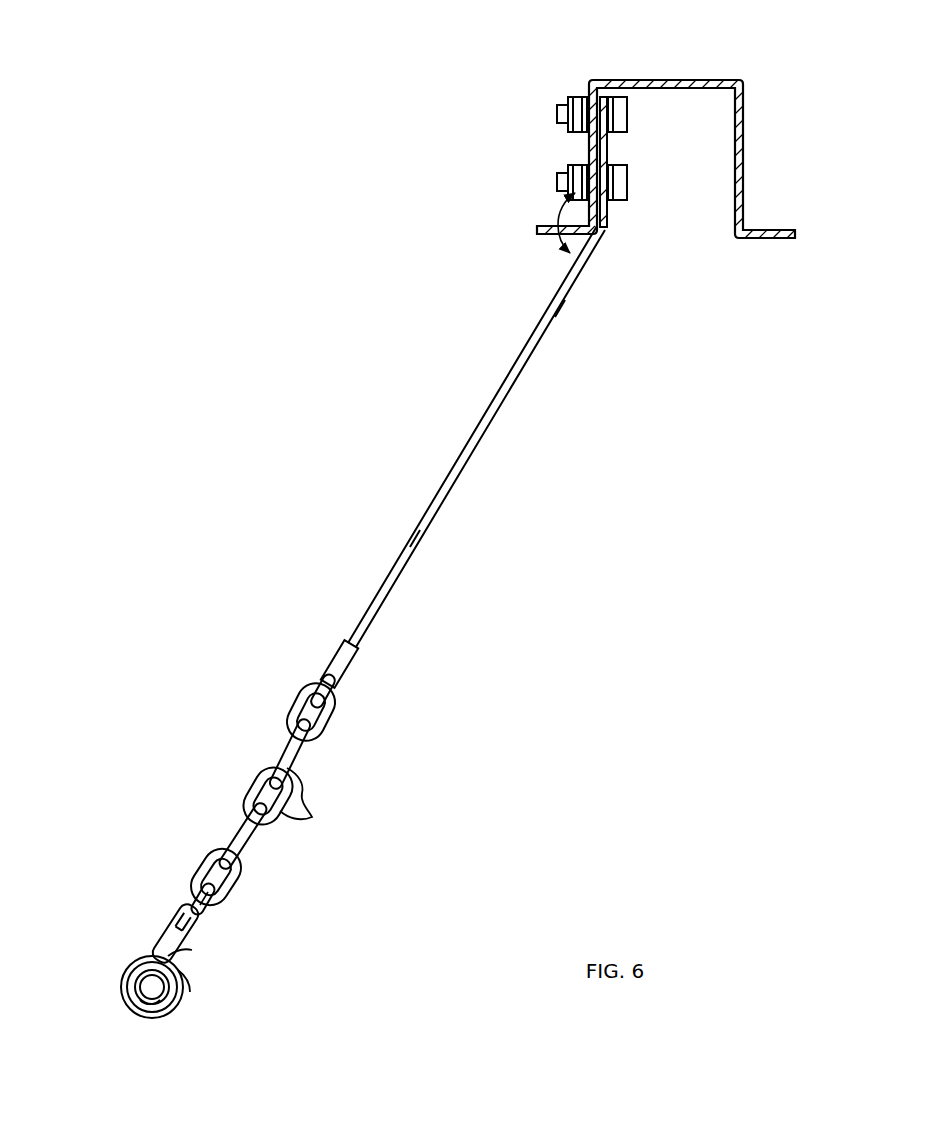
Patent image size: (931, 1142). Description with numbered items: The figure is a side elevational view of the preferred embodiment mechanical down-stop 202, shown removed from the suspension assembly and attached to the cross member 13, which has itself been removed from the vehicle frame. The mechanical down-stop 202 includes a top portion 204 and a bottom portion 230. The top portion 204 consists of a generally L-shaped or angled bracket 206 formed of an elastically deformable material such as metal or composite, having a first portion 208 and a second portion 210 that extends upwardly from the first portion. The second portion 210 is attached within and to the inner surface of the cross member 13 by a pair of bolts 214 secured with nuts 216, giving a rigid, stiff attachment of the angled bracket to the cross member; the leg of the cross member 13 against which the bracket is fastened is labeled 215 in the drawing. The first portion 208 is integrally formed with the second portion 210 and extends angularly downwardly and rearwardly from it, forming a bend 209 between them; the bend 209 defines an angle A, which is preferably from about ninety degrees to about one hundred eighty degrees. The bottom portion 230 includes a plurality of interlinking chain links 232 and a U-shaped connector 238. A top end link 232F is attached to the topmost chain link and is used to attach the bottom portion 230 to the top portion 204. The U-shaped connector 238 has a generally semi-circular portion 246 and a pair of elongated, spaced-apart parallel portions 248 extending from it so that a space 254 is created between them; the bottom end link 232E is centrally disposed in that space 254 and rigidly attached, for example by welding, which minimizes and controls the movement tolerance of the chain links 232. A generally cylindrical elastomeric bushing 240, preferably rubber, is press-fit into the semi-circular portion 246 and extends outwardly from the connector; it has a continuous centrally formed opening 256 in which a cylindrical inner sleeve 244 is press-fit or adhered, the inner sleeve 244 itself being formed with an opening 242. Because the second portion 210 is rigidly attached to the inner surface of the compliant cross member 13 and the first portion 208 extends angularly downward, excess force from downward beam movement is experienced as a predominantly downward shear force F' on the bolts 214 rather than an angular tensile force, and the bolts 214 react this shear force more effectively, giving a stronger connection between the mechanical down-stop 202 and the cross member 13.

The cross member 13 is at (745, 123).
The mechanical down-stop 202 is at (310, 287).
The top portion 204 is at (559, 337).
The angled bracket 206 is at (447, 500).
The first portion 208 is at (450, 468).
The bend 209 is at (599, 229).
The second portion 210 is at (603, 105).
The bolts 214 is at (622, 103).
The bracket leg 215 is at (598, 150).
The nuts 216 is at (576, 102).
The bottom portion 230 is at (237, 755).
The chain links 232 is at (250, 838).
The bottom end link 232E is at (208, 918).
The top end link 232F is at (338, 655).
The U-shaped connector 238 is at (170, 898).
The elastomeric bushing 240 is at (163, 1012).
The opening 242 is at (167, 1008).
The inner sleeve 244 is at (153, 960).
The semi-circular portion 246 is at (127, 993).
The elongated portions 248 is at (167, 950).
The space 254 is at (190, 985).
The opening 256 is at (140, 1008).
The angle A is at (561, 222).
The downward shear force F' is at (702, 205).